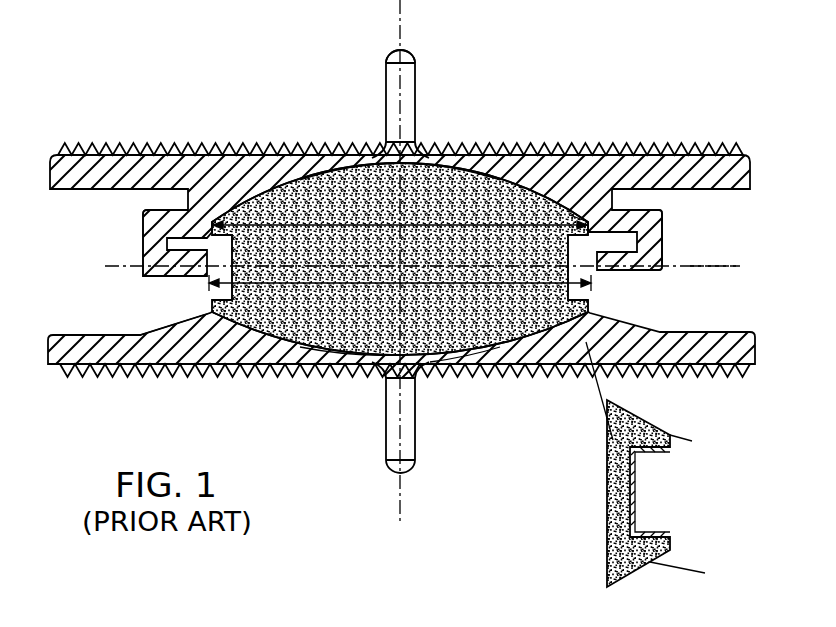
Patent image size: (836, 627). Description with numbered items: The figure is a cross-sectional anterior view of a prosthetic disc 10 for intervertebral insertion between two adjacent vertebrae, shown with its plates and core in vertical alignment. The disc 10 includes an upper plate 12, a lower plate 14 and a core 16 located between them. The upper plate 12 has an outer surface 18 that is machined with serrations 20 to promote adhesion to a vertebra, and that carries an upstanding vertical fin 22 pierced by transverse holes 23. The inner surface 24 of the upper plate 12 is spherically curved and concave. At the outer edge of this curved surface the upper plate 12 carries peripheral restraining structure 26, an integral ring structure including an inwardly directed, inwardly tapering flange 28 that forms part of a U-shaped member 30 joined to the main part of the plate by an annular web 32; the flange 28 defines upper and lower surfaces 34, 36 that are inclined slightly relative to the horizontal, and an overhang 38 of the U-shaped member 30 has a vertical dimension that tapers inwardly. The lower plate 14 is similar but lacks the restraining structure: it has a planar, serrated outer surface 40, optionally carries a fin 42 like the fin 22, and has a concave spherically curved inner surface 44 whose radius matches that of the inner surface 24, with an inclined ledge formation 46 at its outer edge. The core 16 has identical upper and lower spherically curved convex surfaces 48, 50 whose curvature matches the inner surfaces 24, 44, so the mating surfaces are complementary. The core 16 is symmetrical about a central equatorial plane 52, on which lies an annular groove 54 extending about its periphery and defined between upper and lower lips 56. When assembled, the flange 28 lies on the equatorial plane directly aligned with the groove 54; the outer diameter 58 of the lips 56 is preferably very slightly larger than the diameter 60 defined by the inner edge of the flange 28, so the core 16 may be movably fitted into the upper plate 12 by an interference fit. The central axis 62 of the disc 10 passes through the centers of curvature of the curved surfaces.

The prosthetic disc 10 is at (507, 98).
The upper plate 12 is at (80, 198).
The lower plate 14 is at (88, 330).
The core 16 is at (458, 358).
The outer surface 18 is at (185, 135).
The serrations 20 is at (228, 145).
The fin 22 is at (391, 56).
The transverse holes 23 is at (388, 94).
The inner surface 24 is at (455, 163).
The peripheral restraining structure 26 is at (670, 262).
The flange 28 is at (160, 276).
The U-shaped member 30 is at (652, 224).
The annular web 32 is at (622, 197).
The upper surface 34 is at (247, 265).
The lower surface 36 is at (188, 277).
The overhang 38 is at (165, 240).
The outer surface 40 is at (156, 398).
The fin 42 is at (410, 470).
The inner surface 44 is at (330, 364).
The inclined ledge formation 46 is at (160, 330).
The upper curved surface 48 is at (334, 163).
The lower curved surface 50 is at (440, 367).
The equatorial plane 52 is at (718, 268).
The groove 54 is at (580, 254).
The lips 56 is at (587, 200).
The outer diameter 58 is at (400, 225).
The diameter 60 is at (400, 289).
The central axis 62 is at (400, 503).